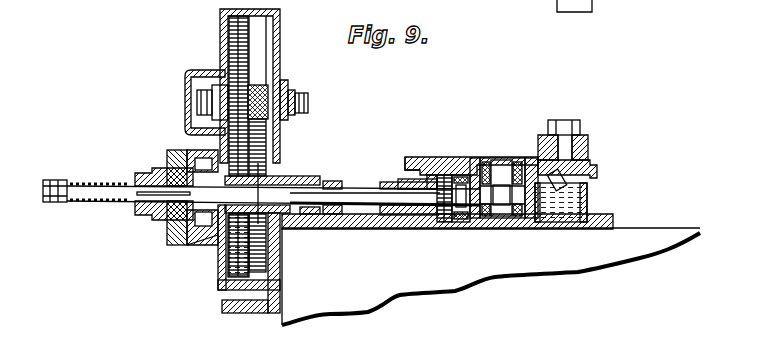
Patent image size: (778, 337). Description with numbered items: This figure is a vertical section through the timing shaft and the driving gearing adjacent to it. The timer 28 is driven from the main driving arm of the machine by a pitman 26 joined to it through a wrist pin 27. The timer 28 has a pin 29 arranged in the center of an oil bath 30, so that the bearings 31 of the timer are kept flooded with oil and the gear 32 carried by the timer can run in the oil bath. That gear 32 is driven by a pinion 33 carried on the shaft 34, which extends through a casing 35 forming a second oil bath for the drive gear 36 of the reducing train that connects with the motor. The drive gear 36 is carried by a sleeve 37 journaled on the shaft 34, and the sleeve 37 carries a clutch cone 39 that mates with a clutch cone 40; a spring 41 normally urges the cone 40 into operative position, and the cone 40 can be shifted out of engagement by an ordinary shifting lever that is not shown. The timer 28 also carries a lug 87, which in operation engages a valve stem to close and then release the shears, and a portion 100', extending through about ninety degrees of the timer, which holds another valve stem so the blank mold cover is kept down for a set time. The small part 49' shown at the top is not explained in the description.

The casing 35 is at (281, 61).
The drive gear 36 is at (268, 162).
The shaft 34 is at (353, 187).
The oil bath 30 is at (590, 200).
The pinion 33 is at (440, 220).
The bearings 31 is at (483, 220).
The gear 32 is at (563, 190).
The pin 29 is at (510, 160).
The timer 28 is at (435, 158).
The portion of the timer 100' is at (402, 149).
The wrist pin 27 is at (567, 120).
The pitman 26 is at (590, 143).
The lug 87 is at (597, 172).
The spring 41 is at (113, 203).
The clutch cone 40 is at (168, 218).
The clutch cone 39 is at (198, 238).
The sleeve 37 is at (258, 163).
The bracket 49' is at (606, 10).